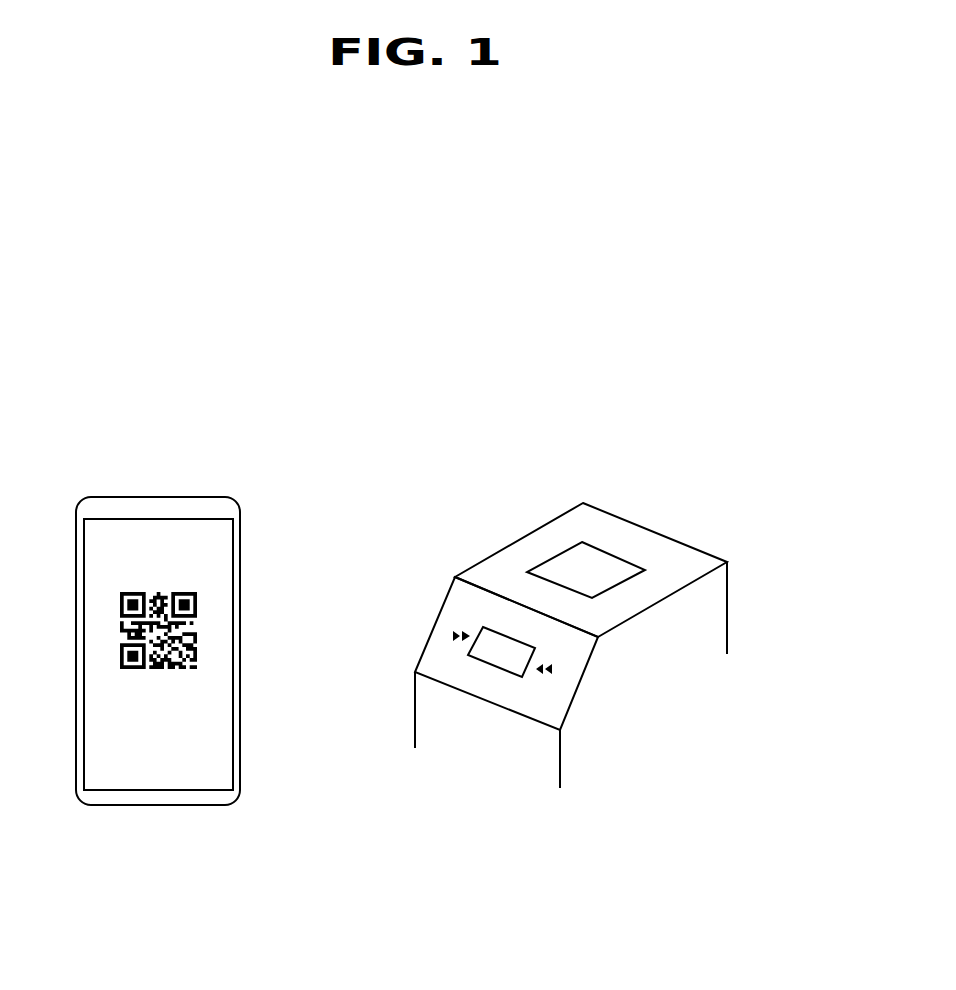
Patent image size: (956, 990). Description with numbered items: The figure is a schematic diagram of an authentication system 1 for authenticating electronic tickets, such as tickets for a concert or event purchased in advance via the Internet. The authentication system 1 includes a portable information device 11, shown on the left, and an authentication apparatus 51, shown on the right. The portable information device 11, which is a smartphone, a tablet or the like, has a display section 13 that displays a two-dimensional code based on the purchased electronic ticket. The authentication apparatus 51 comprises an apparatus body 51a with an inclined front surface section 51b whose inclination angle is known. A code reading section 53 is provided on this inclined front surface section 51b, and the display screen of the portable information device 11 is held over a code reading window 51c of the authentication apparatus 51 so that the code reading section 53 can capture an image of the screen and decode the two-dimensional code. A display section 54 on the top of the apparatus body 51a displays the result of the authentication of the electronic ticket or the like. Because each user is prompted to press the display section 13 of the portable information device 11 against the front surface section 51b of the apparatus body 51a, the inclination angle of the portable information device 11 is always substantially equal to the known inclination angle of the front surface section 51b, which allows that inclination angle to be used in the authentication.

The authentication system 1 is at (407, 326).
The portable information device 11 is at (180, 461).
The display section 13 is at (218, 596).
The authentication apparatus 51 is at (618, 461).
The apparatus body 51a is at (692, 544).
The front surface section 51b is at (563, 690).
The code reading window 51c is at (498, 650).
The code reading section 53 is at (495, 667).
The display section 54 is at (600, 563).